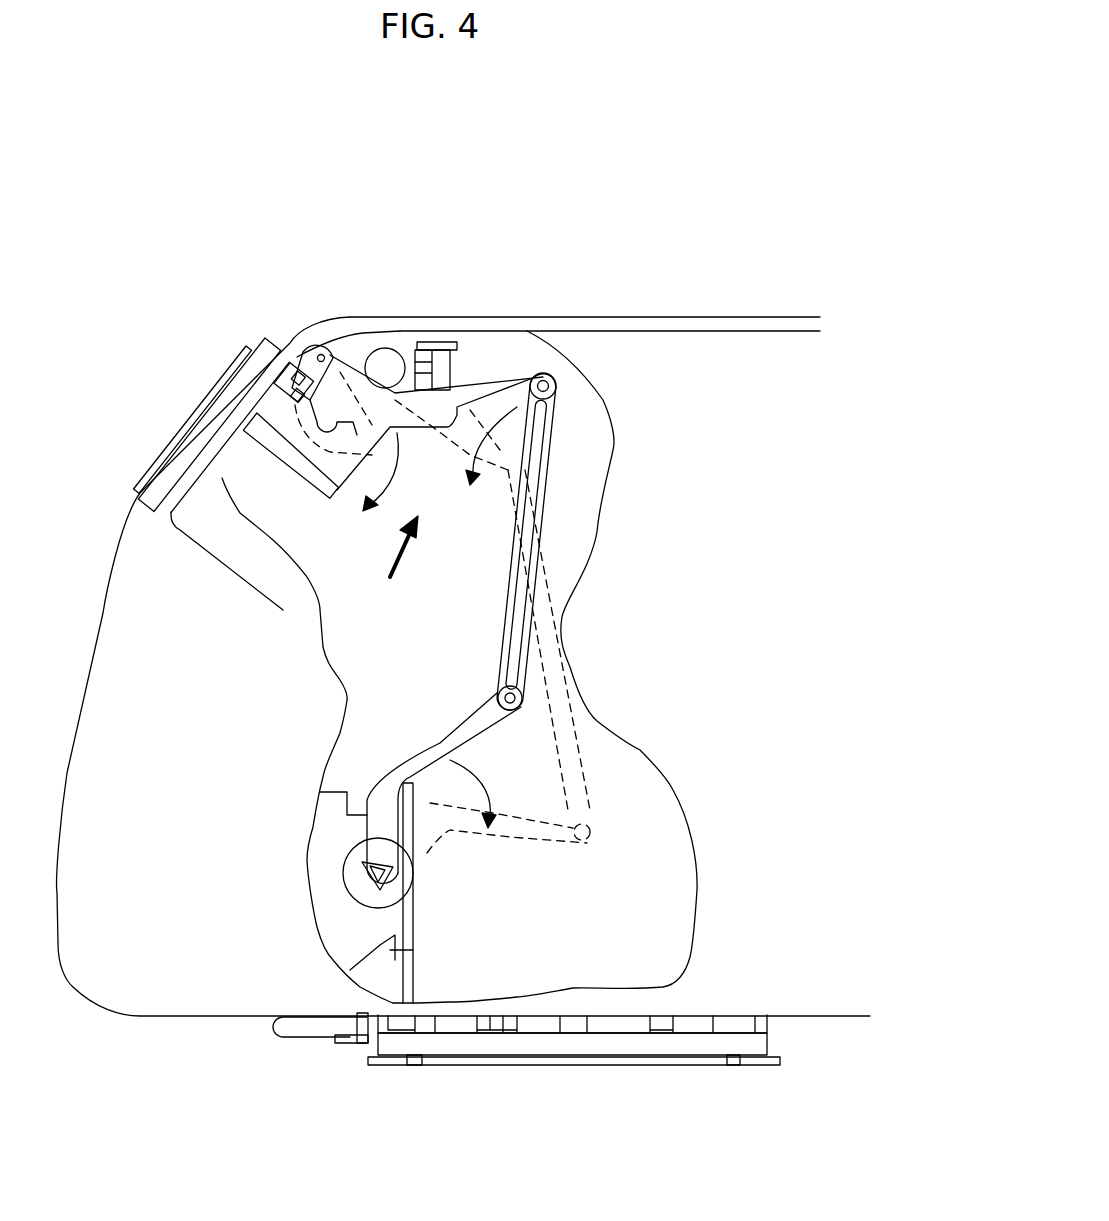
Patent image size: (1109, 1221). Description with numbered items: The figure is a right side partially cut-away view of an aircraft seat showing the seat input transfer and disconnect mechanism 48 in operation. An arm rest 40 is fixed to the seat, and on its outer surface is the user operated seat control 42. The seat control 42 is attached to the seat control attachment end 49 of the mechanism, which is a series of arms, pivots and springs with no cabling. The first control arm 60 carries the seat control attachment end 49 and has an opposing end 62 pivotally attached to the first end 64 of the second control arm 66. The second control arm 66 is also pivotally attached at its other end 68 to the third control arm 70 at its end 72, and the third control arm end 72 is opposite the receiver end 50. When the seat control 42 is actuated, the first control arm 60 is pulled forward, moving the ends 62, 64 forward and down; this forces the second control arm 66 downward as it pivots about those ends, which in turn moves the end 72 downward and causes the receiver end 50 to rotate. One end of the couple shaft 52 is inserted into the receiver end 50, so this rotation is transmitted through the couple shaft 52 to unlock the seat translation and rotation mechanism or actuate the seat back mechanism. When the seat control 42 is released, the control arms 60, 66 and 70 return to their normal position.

The arm rest 40 is at (657, 317).
The seat control 42 is at (195, 412).
The seat input transfer and disconnect mechanism 48 is at (394, 564).
The seat control attachment end 49 is at (300, 357).
The receiver end 50 is at (362, 903).
The couple shaft 52 is at (362, 878).
The first control arm 60 is at (433, 400).
The opposing end 62 is at (543, 380).
The first end 64 is at (556, 386).
The second control arm 66 is at (532, 497).
The other end 68 is at (503, 700).
The third control arm 70 is at (478, 727).
The third control arm end 72 is at (521, 702).